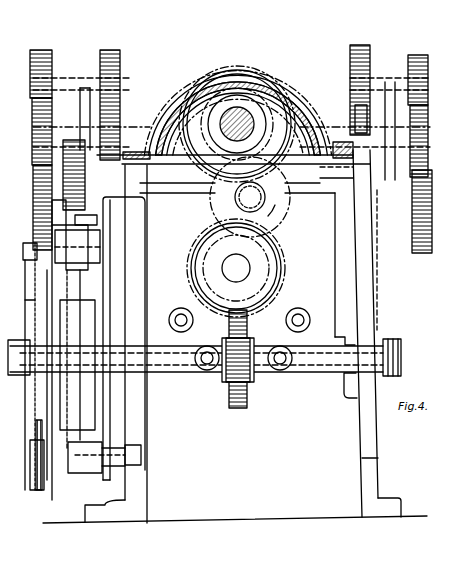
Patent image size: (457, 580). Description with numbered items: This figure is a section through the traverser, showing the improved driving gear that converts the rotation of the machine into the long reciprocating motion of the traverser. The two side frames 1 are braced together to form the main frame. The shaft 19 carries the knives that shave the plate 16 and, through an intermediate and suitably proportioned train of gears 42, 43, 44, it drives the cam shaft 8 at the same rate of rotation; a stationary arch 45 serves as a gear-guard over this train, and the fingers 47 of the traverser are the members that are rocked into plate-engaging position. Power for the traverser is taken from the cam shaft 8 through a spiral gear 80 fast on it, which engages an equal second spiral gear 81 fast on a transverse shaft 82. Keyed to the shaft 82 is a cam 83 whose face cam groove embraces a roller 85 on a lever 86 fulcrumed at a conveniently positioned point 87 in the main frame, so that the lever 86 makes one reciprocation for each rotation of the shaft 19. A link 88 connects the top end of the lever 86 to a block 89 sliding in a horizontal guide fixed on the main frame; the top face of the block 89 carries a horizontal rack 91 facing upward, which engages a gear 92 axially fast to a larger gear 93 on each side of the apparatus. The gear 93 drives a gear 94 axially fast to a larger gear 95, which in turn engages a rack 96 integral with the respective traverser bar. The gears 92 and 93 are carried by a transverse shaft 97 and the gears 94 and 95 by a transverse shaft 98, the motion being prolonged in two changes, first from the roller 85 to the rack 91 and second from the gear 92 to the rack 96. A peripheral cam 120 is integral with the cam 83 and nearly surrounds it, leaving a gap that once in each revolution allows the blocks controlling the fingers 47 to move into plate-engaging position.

The side frame 1 is at (110, 295).
The cam shaft 8 is at (237, 258).
The plate 16 is at (240, 58).
The shaft 19 is at (236, 106).
The gear 42 is at (255, 140).
The gear 43 is at (285, 212).
The gear 44 is at (268, 278).
The stationary arch 45 is at (298, 86).
The finger 47 is at (318, 109).
The spiral gear 80 is at (286, 258).
The second spiral gear 81 is at (244, 406).
The transverse shaft 82 is at (158, 352).
The cam 83 is at (38, 436).
The roller 85 is at (55, 368).
The lever 86 is at (82, 318).
The fulcrum point 87 is at (142, 455).
The link 88 is at (103, 246).
The block 89 is at (95, 238).
The horizontal rack 91 is at (62, 208).
The gear 92 is at (65, 205).
The larger gear 93 is at (33, 205).
The gear 94 is at (45, 52).
The larger gear 95 is at (120, 60).
The rack 96 is at (115, 121).
The transverse shaft 97 is at (167, 183).
The transverse shaft 98 is at (67, 90).
The peripheral cam 120 is at (30, 320).